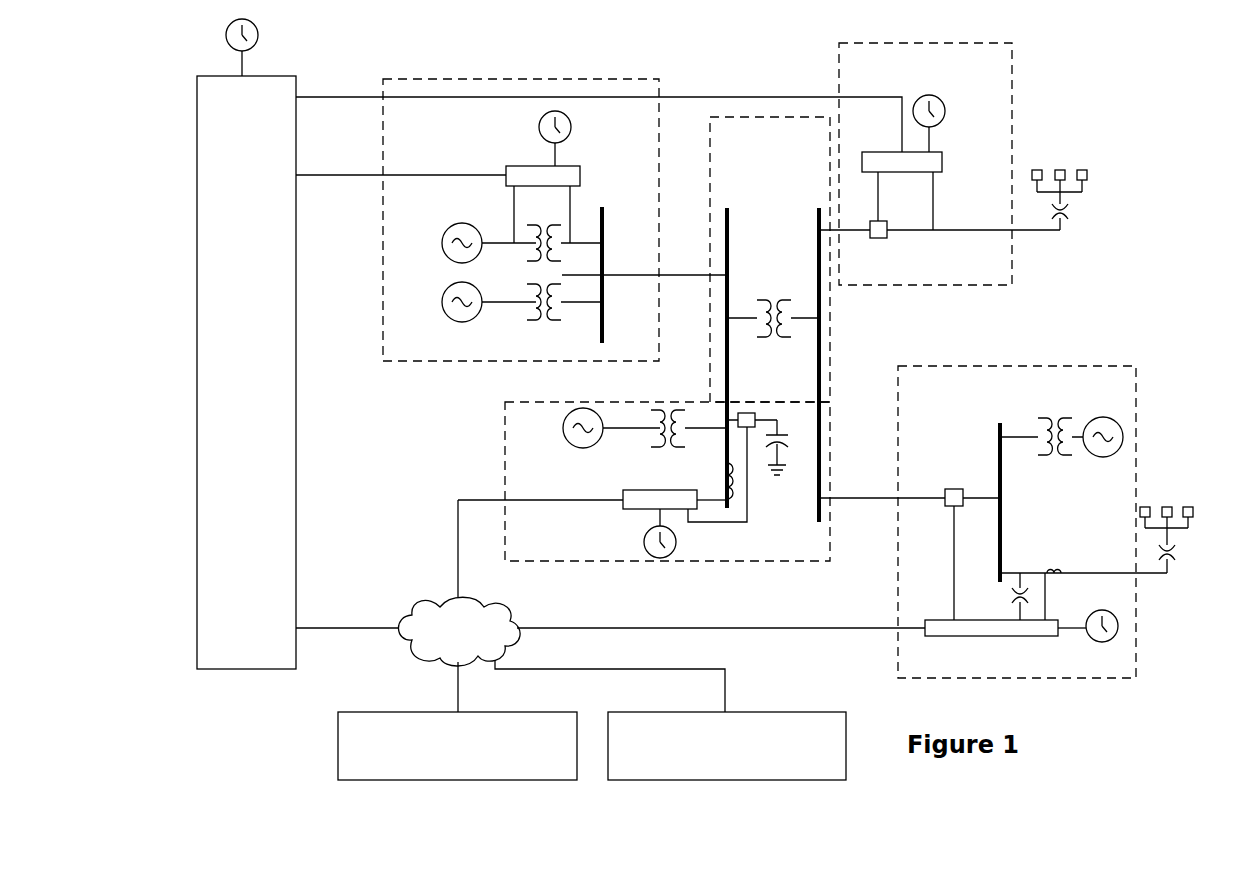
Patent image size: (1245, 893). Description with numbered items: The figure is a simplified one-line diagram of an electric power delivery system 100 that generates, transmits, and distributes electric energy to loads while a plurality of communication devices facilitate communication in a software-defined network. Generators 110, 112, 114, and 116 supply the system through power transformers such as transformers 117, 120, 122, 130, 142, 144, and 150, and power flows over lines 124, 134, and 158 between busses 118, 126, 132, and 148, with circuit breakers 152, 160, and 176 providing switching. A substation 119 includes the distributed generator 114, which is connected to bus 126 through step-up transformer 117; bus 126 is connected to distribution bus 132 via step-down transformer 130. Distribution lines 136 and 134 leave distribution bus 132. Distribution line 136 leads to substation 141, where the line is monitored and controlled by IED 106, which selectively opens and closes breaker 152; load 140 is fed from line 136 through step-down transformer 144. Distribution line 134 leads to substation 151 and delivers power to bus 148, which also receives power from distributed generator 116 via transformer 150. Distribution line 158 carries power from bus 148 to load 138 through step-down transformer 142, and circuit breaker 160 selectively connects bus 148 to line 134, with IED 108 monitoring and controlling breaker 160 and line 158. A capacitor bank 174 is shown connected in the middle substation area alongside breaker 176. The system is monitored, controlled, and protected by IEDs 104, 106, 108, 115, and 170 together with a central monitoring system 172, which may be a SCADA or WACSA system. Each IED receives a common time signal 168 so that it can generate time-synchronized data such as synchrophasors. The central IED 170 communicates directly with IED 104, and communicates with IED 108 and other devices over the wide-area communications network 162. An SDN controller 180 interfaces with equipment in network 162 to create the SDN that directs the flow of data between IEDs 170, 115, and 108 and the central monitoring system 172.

The electric power delivery system 100 is at (1117, 96).
The IED 104 is at (524, 165).
The IED 106 is at (877, 151).
The IED 108 is at (1030, 637).
The generator 110 is at (440, 242).
The generator 112 is at (440, 302).
The generator 114 is at (562, 428).
The IED 115 is at (690, 490).
The distributed generator 116 is at (1094, 456).
The step-up transformer 117 is at (652, 440).
The bus 118 is at (606, 324).
The substation 119 is at (610, 562).
The transformer 120 is at (527, 259).
The transformer 122 is at (546, 322).
The line 124 is at (676, 277).
The bus 126 is at (730, 338).
The step-down transformer 130 is at (770, 300).
The distribution bus 132 is at (817, 490).
The distribution line 134 is at (906, 500).
The distribution line 136 is at (850, 232).
The load 138 is at (1167, 506).
The load 140 is at (1092, 176).
The substation 141 is at (990, 286).
The step-down transformer 142 is at (1178, 556).
The step-down transformer 144 is at (1072, 212).
The bus 148 is at (998, 427).
The transformer 150 is at (1046, 418).
The substation 151 is at (1078, 680).
The breaker 152 is at (890, 240).
The distribution line 158 is at (1068, 572).
The circuit breaker 160 is at (955, 488).
The communications network 162 is at (445, 648).
The common time signal 168 is at (258, 38).
The central IED 170 is at (233, 396).
The central monitoring system 172 is at (445, 768).
The capacitor bank 174 is at (784, 432).
The breaker 176 is at (748, 412).
The SDN controller 180 is at (714, 768).